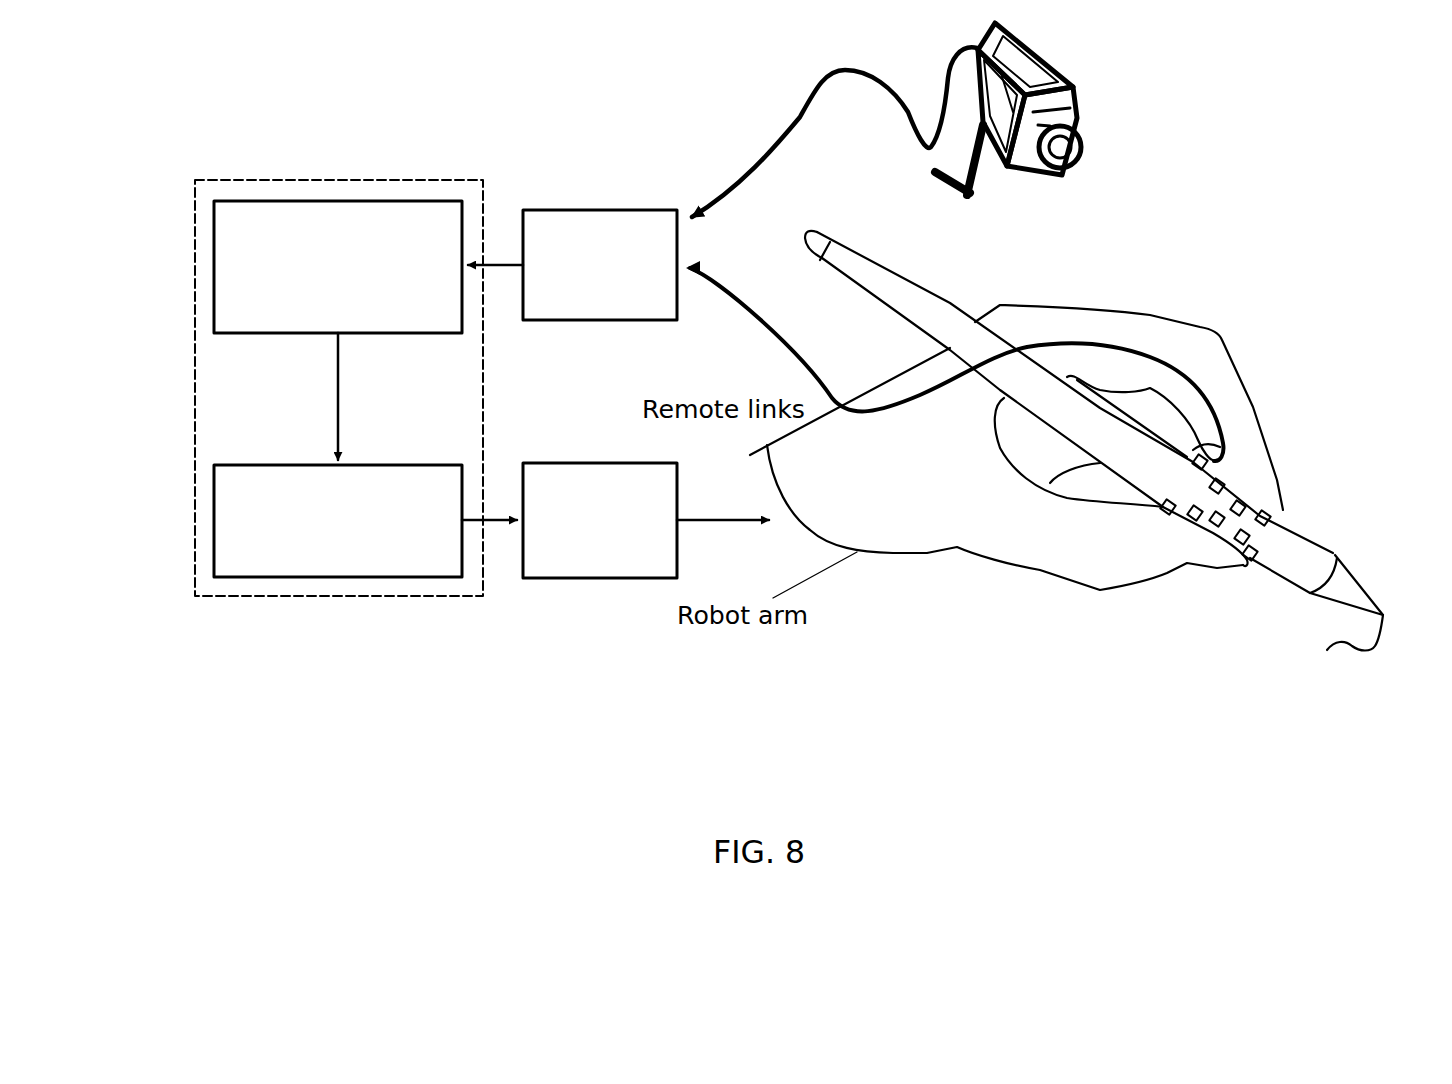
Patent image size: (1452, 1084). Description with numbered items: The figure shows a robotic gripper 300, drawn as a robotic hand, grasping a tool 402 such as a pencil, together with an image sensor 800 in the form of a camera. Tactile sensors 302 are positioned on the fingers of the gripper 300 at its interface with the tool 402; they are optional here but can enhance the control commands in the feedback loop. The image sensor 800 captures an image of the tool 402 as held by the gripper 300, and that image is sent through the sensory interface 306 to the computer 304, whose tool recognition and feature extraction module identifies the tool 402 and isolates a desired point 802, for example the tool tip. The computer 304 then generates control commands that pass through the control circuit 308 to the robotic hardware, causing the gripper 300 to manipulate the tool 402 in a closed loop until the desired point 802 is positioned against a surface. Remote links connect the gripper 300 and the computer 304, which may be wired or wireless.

The robotic gripper 300 is at (1012, 518).
The tactile sensor 302 is at (1222, 517).
The computer 304 is at (452, 598).
The sensory interface 306 is at (620, 210).
The control circuit 308 is at (622, 578).
The tool 402 is at (1293, 550).
The image sensor 800 is at (1073, 85).
The desired point 802 is at (1327, 650).